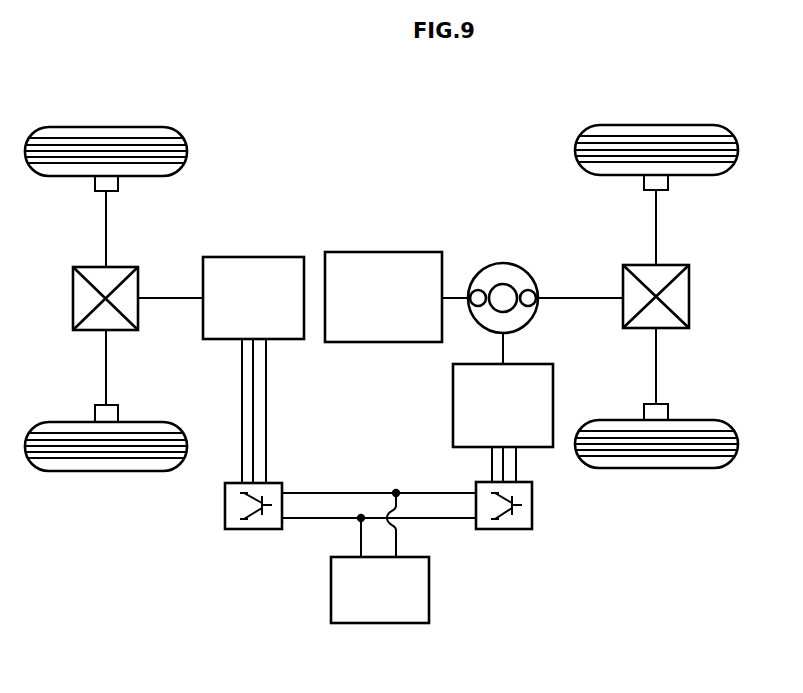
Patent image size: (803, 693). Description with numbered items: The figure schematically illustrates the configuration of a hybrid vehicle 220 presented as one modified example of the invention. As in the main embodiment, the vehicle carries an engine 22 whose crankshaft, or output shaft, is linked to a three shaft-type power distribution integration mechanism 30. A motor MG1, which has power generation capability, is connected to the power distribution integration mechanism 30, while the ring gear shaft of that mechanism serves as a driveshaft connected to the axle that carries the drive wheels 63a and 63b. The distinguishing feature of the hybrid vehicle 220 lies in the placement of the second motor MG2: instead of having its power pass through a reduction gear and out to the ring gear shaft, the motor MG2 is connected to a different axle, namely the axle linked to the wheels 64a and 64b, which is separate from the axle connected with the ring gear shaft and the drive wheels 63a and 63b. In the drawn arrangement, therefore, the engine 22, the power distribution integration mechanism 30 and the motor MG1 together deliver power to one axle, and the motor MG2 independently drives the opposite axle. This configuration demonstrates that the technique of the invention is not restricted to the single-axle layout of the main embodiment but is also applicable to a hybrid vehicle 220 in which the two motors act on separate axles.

The hybrid vehicle 220 is at (398, 146).
The engine 22 is at (386, 252).
The power distribution integration mechanism 30 is at (503, 263).
The motor MG1 is at (453, 402).
The motor MG2 is at (255, 257).
The drive wheel 63a is at (657, 125).
The drive wheel 63b is at (657, 468).
The wheel 64a is at (107, 127).
The wheel 64b is at (107, 472).